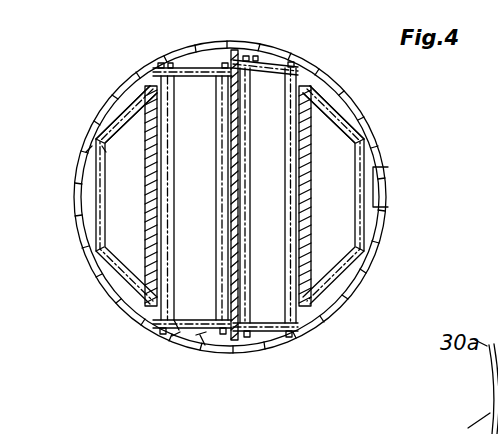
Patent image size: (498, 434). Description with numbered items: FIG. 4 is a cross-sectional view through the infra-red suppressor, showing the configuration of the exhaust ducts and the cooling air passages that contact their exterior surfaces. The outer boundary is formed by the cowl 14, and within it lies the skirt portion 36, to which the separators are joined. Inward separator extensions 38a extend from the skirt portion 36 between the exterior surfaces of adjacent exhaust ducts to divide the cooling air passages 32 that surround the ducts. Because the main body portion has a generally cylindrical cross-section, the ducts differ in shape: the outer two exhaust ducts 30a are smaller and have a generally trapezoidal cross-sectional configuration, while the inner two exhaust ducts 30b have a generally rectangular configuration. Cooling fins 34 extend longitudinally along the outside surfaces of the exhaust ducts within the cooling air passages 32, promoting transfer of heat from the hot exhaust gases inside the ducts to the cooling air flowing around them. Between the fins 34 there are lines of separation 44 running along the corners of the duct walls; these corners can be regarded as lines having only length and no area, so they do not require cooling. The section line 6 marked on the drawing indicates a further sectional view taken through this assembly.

The cowl 14 is at (292, 51).
The skirt portion 36 is at (137, 325).
The inward separator extensions 38a is at (143, 86).
The inner exhaust ducts 30b is at (198, 82).
The outer exhaust ducts 30a is at (132, 258).
The cooling air passages 32 is at (347, 116).
The lines of separation 44 is at (88, 146).
The cooling fins 34 is at (176, 340).
The section line 6- 6 is at (386, 166).